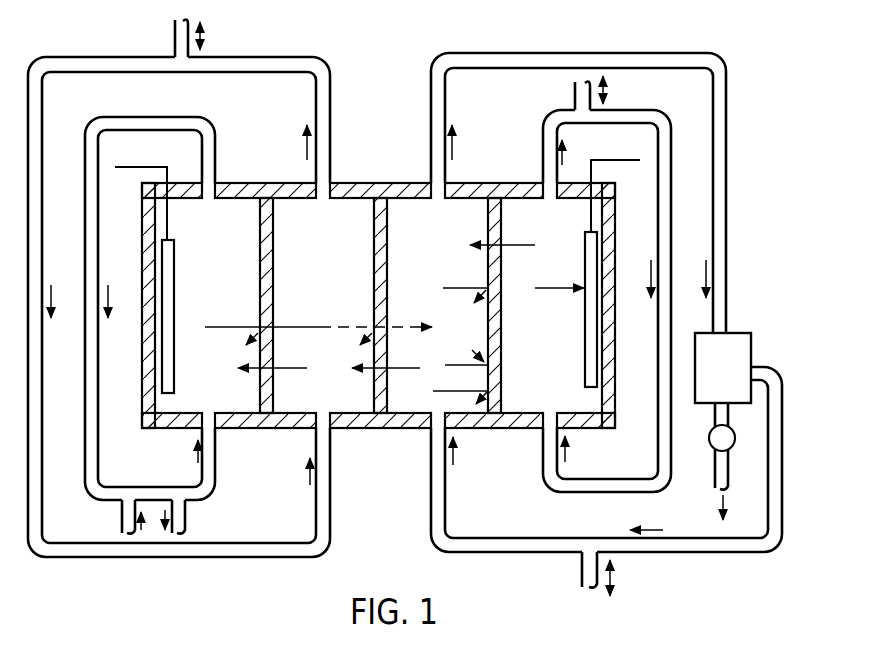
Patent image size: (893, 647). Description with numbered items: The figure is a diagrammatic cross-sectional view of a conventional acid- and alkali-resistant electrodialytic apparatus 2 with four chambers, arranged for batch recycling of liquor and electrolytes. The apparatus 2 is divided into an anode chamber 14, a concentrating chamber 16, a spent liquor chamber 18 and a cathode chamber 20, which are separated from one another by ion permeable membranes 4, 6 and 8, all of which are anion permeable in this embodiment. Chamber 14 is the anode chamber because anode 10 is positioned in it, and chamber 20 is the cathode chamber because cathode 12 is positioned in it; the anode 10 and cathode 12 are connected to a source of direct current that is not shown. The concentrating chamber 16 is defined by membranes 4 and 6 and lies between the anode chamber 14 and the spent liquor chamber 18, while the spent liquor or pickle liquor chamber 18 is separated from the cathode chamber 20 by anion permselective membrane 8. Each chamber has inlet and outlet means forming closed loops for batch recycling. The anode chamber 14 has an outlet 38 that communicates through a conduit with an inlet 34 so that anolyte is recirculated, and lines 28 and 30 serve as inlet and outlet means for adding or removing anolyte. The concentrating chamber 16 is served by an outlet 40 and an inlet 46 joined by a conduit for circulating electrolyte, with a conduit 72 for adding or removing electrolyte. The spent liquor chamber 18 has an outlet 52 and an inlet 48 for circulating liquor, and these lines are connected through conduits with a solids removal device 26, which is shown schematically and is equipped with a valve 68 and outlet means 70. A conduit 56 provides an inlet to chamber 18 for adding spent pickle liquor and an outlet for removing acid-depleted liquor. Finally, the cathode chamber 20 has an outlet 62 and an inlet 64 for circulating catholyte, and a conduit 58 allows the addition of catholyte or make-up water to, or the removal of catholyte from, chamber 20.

The electrodialytic apparatus 2 is at (142, 370).
The ion permeable membrane 4 is at (260, 246).
The ion permeable membrane 6 is at (374, 245).
The anion permselective membrane 8 is at (488, 217).
The anode 10 is at (162, 251).
The cathode 12 is at (592, 352).
The anode chamber 14 is at (191, 410).
The concentrating chamber 16 is at (310, 410).
The spent liquor chamber 18 is at (415, 410).
The cathode chamber 20 is at (535, 410).
The solids removal device 26 is at (723, 368).
The line 28 is at (122, 524).
The line 30 is at (186, 520).
The inlet 34 is at (216, 472).
The outlet 38 is at (215, 152).
The outlet 40 is at (330, 131).
The inlet 46 is at (332, 500).
The inlet 48 is at (446, 500).
The outlet 52 is at (430, 131).
The conduit 56 is at (582, 580).
The conduit 58 is at (574, 90).
The outlet 62 is at (542, 155).
The inlet 64 is at (542, 468).
The valve 68 is at (710, 434).
The outlet means 70 is at (730, 462).
The conduit 72 is at (174, 31).